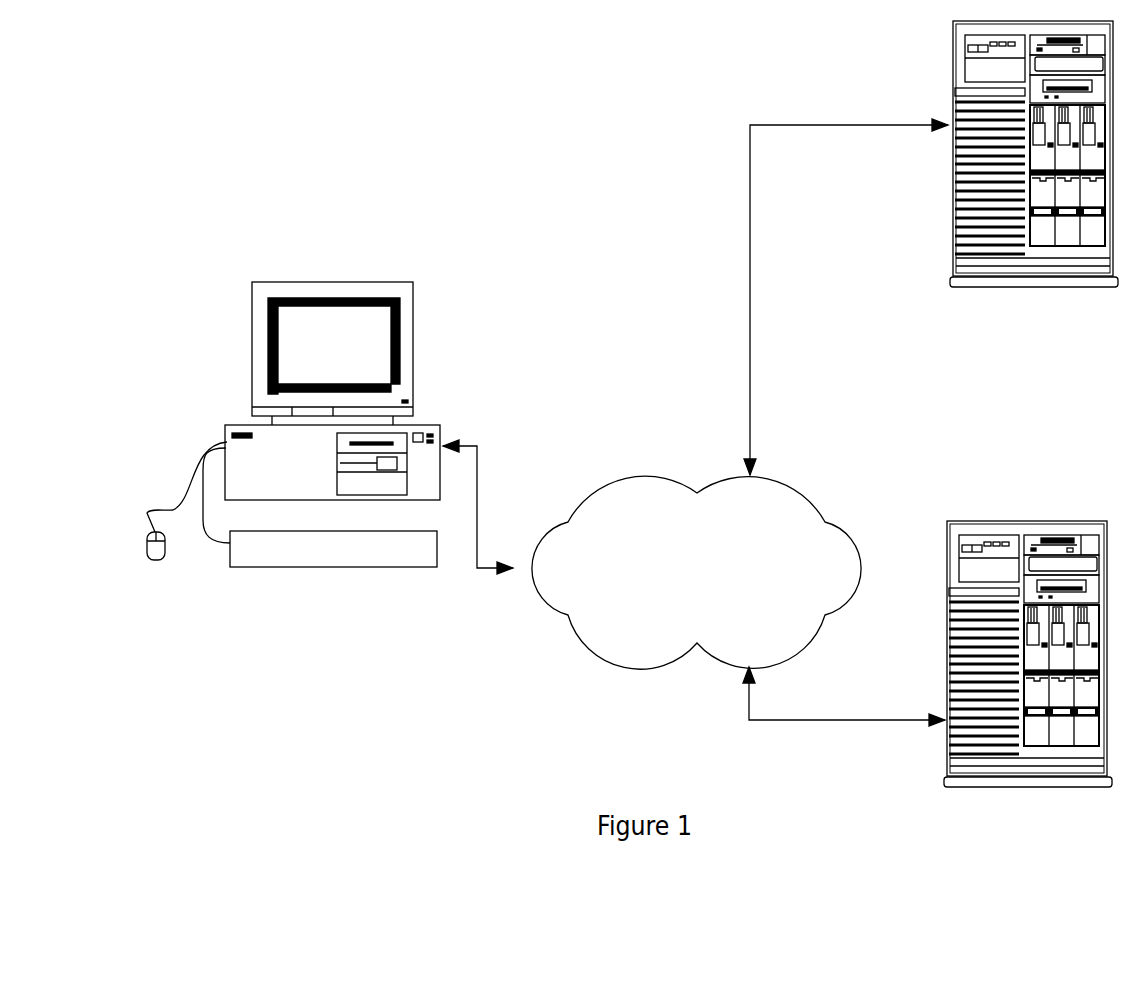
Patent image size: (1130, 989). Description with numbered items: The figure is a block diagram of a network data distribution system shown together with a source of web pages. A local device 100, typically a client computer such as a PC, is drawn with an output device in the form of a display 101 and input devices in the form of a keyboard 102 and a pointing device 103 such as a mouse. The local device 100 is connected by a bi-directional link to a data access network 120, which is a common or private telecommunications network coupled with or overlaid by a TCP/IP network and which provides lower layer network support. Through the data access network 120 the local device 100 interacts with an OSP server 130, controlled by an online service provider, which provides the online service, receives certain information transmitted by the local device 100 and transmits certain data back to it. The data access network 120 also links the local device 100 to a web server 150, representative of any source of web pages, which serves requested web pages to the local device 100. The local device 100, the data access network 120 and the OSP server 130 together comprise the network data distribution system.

The local device 100 is at (253, 427).
The display 101 is at (253, 313).
The keyboard 102 is at (228, 562).
The pointing device 103 is at (147, 538).
The data access network 120 is at (696, 572).
The OSP server 130 is at (1028, 686).
The web server 150 is at (1034, 182).